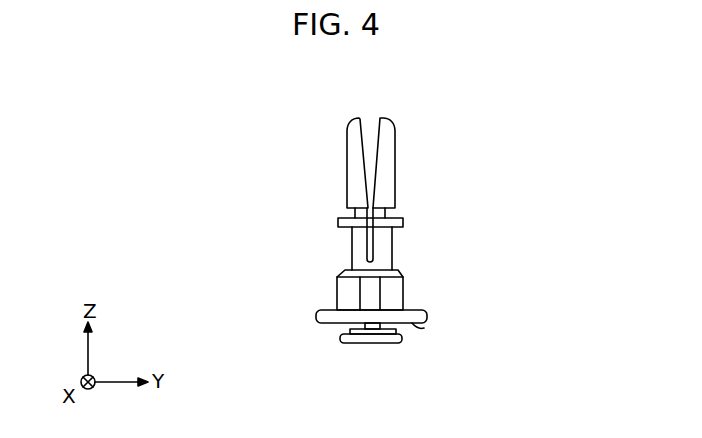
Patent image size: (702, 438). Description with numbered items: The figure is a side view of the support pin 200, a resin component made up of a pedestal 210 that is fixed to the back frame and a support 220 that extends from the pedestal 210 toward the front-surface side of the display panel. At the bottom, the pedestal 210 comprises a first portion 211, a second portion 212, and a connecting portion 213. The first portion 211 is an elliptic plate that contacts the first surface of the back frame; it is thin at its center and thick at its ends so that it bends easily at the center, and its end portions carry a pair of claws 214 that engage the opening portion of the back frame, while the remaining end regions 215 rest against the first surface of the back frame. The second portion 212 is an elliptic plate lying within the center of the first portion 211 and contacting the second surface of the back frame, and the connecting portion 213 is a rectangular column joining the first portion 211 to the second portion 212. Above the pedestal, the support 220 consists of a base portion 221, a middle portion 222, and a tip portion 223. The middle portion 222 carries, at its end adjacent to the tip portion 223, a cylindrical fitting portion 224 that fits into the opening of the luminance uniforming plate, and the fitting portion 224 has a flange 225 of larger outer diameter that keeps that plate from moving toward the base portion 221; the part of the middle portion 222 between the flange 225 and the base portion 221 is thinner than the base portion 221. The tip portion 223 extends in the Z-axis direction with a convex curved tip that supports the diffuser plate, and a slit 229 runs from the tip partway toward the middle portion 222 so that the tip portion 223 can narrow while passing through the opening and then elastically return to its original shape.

The support pin 200 is at (490, 63).
The pedestal 210 is at (385, 368).
The first portion 211 is at (318, 315).
The second portion 212 is at (360, 335).
The connecting portion 213 is at (400, 332).
The claws 214 is at (365, 327).
The regions 215 is at (424, 328).
The support 220 is at (289, 128).
The base portion 221 is at (350, 285).
The middle portion 222 is at (385, 242).
The tip portion 223 is at (348, 169).
The fitting portion 224 is at (382, 211).
The flange 225 is at (338, 222).
The slit 229 is at (363, 138).